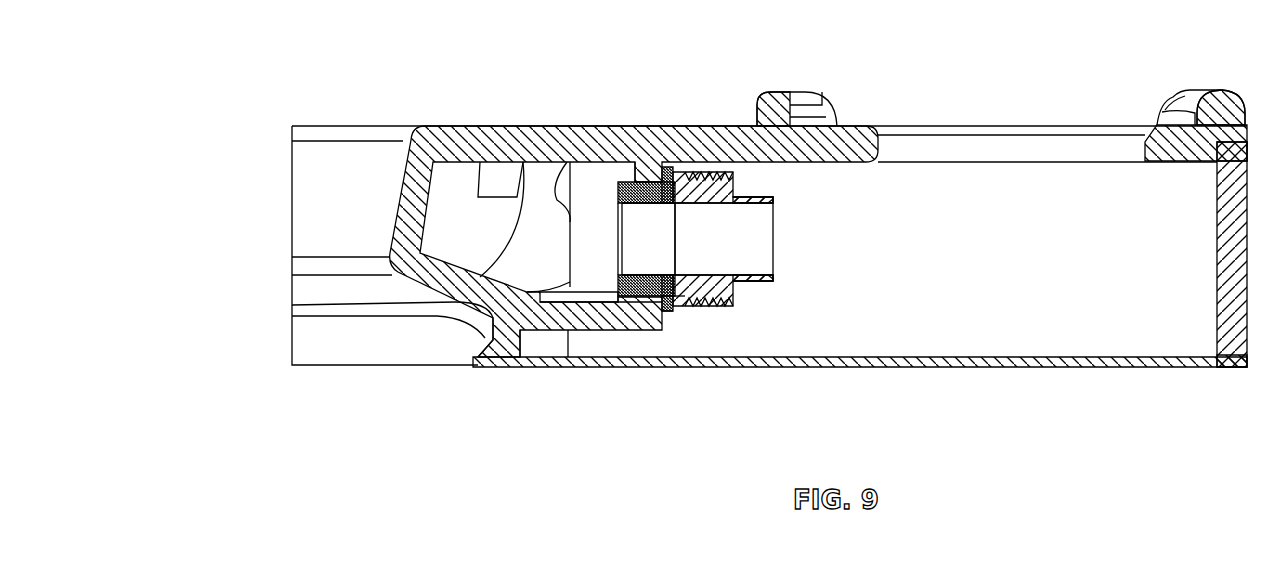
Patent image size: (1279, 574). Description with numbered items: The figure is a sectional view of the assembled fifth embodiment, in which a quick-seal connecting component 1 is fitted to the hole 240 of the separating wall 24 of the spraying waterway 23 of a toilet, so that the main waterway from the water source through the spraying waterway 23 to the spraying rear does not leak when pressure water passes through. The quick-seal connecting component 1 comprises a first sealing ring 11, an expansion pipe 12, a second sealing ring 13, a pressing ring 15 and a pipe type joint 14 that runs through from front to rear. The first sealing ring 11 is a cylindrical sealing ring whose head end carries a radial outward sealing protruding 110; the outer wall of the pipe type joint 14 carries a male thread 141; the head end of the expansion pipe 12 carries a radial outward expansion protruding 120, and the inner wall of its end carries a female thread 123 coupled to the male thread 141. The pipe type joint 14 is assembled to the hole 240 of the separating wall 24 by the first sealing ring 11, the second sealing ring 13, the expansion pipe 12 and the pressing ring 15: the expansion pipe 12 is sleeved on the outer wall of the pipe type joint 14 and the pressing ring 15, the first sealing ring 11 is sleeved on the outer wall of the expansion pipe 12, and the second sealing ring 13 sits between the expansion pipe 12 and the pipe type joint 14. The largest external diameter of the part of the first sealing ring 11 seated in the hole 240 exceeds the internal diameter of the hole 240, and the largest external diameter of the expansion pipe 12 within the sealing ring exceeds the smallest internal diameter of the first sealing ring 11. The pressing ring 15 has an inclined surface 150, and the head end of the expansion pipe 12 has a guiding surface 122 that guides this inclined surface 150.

The quick-seal connecting component 1 is at (748, 300).
The first sealing ring 11 is at (664, 322).
The sealing protruding 110 is at (668, 313).
The expansion pipe 12 is at (680, 305).
The second sealing ring 13 is at (695, 305).
The pipe type joint 14 is at (763, 283).
The male thread 141 is at (733, 173).
The pressing ring 15 is at (528, 322).
The inclined surface 150 is at (648, 260).
The spraying waterway 23 is at (460, 214).
The separating wall 24 is at (638, 170).
The expansion protruding 120 is at (680, 177).
The guiding surface 122 is at (670, 167).
The female thread 123 is at (710, 178).
The hole 240 is at (645, 238).